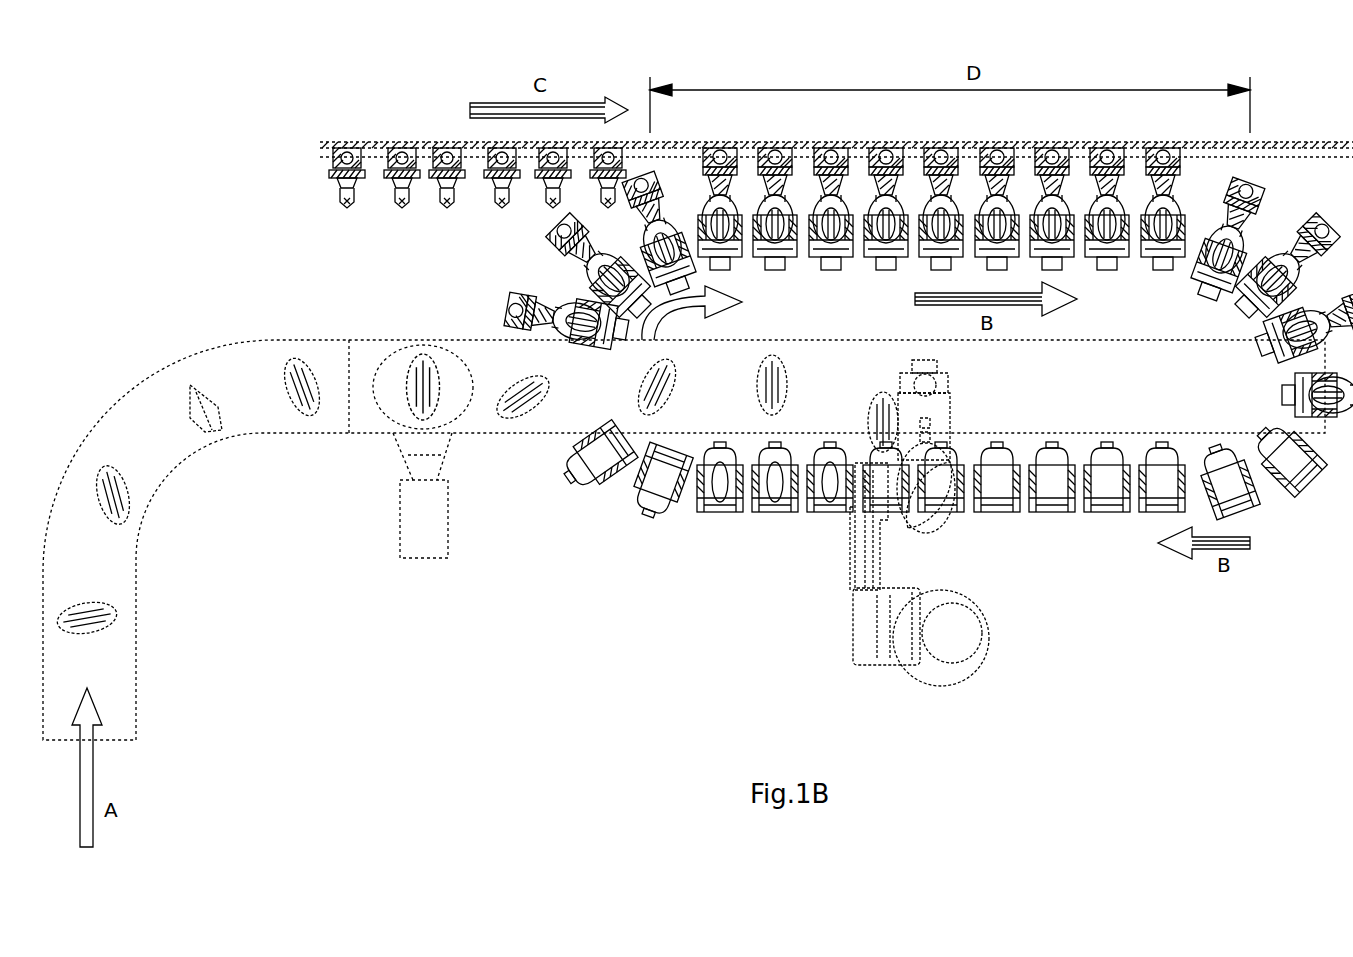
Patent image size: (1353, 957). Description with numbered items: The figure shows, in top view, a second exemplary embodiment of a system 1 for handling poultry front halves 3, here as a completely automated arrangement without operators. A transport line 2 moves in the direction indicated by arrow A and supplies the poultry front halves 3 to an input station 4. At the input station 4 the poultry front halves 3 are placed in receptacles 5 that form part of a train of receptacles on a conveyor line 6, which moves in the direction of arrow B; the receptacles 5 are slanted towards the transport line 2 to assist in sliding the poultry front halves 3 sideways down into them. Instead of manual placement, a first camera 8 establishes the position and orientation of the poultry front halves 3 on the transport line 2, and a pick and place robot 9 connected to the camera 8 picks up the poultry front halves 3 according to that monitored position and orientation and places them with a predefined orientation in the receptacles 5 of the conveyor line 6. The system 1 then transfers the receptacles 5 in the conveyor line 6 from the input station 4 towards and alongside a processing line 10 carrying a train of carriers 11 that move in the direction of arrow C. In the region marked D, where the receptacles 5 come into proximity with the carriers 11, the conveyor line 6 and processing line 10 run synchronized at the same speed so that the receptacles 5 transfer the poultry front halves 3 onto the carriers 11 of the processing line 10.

The system 1 is at (685, 482).
The transport line 2 is at (142, 697).
The poultry front halves 3 is at (212, 388).
The input station 4 is at (1062, 558).
The receptacles 5 is at (777, 515).
The conveyor line 6 is at (542, 277).
The first camera 8 is at (425, 564).
The pick and place robot 9 is at (847, 625).
The processing line 10 is at (378, 137).
The carriers 11 is at (537, 185).